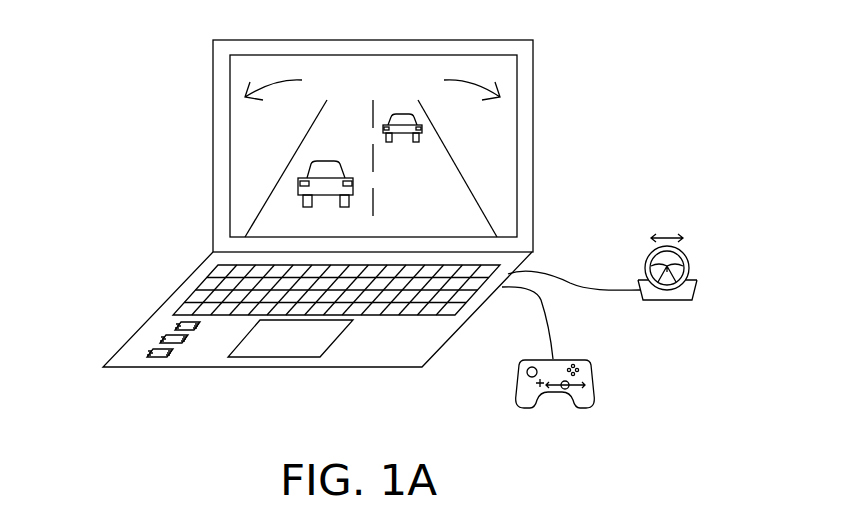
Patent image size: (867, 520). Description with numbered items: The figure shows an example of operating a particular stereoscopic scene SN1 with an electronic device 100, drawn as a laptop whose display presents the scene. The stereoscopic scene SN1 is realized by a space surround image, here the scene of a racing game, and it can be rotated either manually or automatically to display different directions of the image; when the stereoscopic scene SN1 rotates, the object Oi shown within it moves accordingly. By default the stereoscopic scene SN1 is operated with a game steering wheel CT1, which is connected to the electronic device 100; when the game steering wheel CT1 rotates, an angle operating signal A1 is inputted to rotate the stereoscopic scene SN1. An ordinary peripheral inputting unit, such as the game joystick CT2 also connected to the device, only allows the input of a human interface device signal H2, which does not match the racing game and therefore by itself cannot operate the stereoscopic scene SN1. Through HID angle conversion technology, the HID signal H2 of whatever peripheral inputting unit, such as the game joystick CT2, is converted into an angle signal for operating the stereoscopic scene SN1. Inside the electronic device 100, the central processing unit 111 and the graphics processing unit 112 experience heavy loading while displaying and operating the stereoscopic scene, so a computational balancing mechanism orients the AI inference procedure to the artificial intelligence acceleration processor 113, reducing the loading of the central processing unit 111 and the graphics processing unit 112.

The electronic device 100 is at (533, 145).
The stereoscopic scene SN1 is at (498, 72).
The object Oi is at (402, 113).
The central processing unit (CPU) 111 is at (178, 324).
The graphics processing unit (GPU) 112 is at (162, 337).
The artificial intelligence acceleration processor 113 is at (150, 351).
The angle operating signal A1 is at (574, 273).
The human interface device (HID) signal H2 is at (537, 323).
The game steering wheel CT1 is at (690, 262).
The game joystick CT2 is at (593, 368).